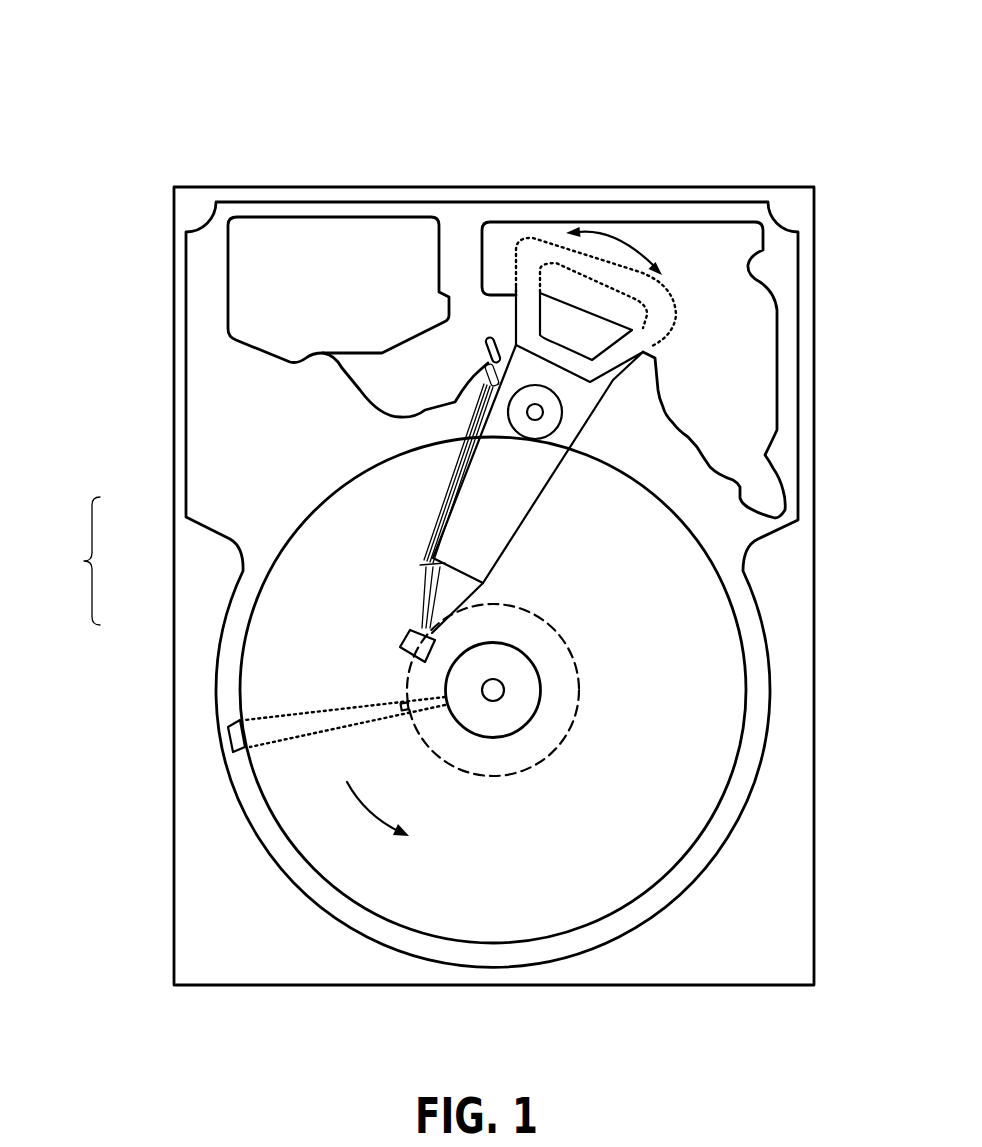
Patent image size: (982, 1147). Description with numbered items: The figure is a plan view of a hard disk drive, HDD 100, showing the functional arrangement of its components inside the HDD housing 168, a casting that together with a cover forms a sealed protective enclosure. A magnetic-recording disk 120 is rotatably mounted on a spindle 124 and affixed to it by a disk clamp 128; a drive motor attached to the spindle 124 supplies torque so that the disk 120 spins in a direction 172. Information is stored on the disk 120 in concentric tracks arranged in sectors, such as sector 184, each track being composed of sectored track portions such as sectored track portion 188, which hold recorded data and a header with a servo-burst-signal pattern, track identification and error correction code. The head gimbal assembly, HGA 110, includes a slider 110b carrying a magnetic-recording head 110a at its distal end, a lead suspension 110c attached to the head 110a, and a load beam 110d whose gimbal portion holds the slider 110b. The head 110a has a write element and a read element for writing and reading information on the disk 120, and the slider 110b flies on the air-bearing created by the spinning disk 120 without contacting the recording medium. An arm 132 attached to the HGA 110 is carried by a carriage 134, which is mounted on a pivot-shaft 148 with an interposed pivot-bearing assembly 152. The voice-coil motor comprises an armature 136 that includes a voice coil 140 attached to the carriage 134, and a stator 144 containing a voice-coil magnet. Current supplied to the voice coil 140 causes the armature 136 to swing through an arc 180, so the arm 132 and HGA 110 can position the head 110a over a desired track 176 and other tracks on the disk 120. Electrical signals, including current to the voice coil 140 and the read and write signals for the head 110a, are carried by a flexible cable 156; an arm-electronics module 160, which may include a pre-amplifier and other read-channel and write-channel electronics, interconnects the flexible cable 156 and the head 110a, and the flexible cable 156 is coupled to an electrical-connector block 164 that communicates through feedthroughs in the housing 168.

The hard disk drive (HDD) 100 is at (98, 62).
The head gimbal assembly (HGA) 110 is at (69, 561).
The magnetic-recording head 110a is at (407, 633).
The slider 110b is at (425, 614).
The lead suspension 110c is at (427, 592).
The load beam 110d is at (423, 567).
The magnetic-recording disk 120 is at (677, 642).
The spindle 124 is at (503, 687).
The disk clamp 128 is at (520, 707).
The arm 132 is at (487, 527).
The carriage 134 is at (552, 445).
The armature 136 is at (505, 347).
The voice coil 140 is at (530, 303).
The stator 144 is at (745, 313).
The pivot-shaft 148 is at (540, 412).
The pivot-bearing assembly 152 is at (545, 423).
The flexible cable 156 is at (360, 387).
The arm-electronics (AE) module 160 is at (480, 378).
The electrical-connector block 164 is at (253, 289).
The HDD housing 168 is at (795, 202).
The direction 172 is at (383, 815).
The track 176 is at (572, 652).
The arc 180 is at (613, 242).
The sector 184 is at (225, 738).
The sectored track portion 188 is at (402, 705).